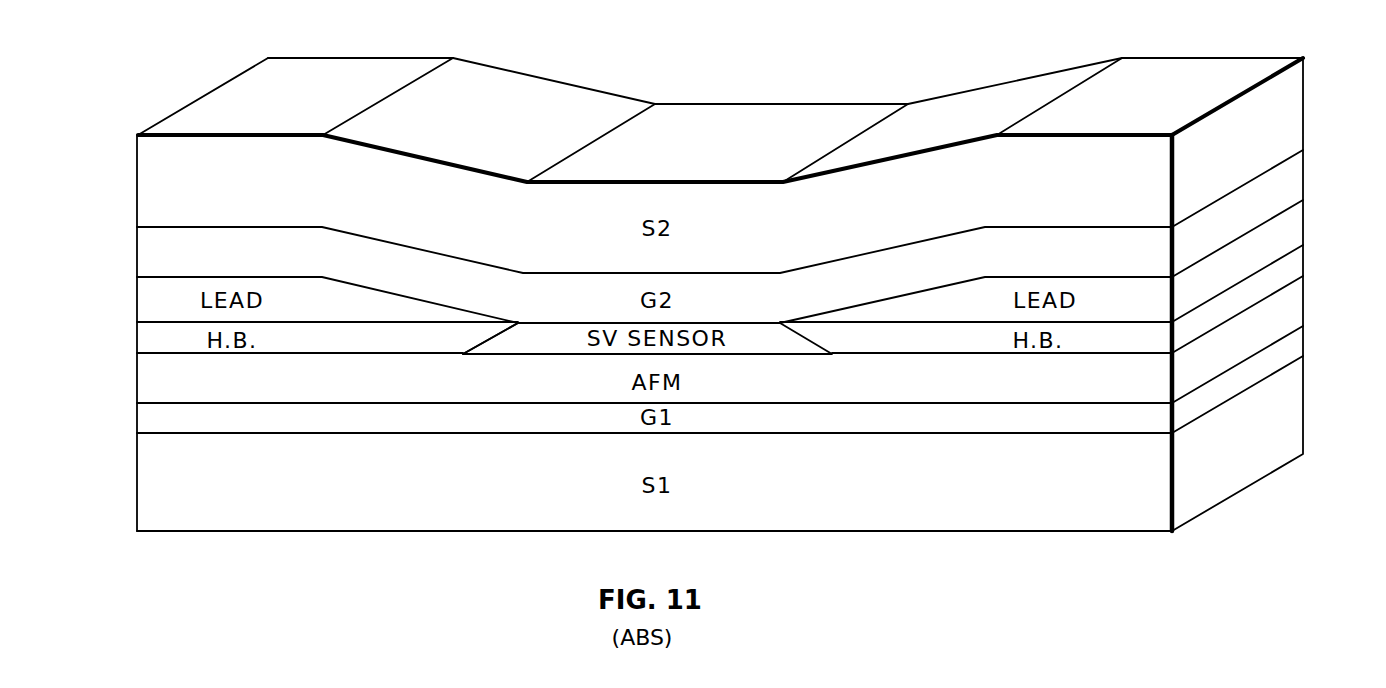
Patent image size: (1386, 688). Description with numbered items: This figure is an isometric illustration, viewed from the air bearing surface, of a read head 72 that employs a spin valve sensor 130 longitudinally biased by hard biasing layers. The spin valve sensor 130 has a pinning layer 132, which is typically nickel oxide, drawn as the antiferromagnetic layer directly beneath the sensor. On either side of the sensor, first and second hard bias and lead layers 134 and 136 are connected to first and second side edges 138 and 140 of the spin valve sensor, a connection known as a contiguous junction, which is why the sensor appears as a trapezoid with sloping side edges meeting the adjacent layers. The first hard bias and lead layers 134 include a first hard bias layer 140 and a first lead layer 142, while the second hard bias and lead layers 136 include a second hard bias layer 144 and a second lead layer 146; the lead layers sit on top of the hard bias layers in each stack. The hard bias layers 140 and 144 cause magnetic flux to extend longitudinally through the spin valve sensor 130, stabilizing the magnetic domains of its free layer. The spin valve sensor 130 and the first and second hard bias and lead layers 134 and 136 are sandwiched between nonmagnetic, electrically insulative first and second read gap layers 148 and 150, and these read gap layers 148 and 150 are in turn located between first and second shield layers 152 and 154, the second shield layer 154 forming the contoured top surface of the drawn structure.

The read head 72 is at (783, 72).
The spin valve sensor 130 is at (558, 323).
The pinning layer 132 is at (837, 388).
The first hard bias and lead layers 134 is at (128, 278).
The second hard bias and lead layers 136 is at (1310, 197).
The first side edge 138 is at (473, 345).
The first hard bias layer 140 is at (167, 337).
The first lead layer 142 is at (167, 297).
The second hard bias layer 144 is at (1108, 337).
The second lead layer 146 is at (1113, 300).
The first read gap layer 148 is at (362, 417).
The second read gap layer 150 is at (419, 263).
The first shield layer 152 is at (249, 507).
The second shield layer 154 is at (560, 100).